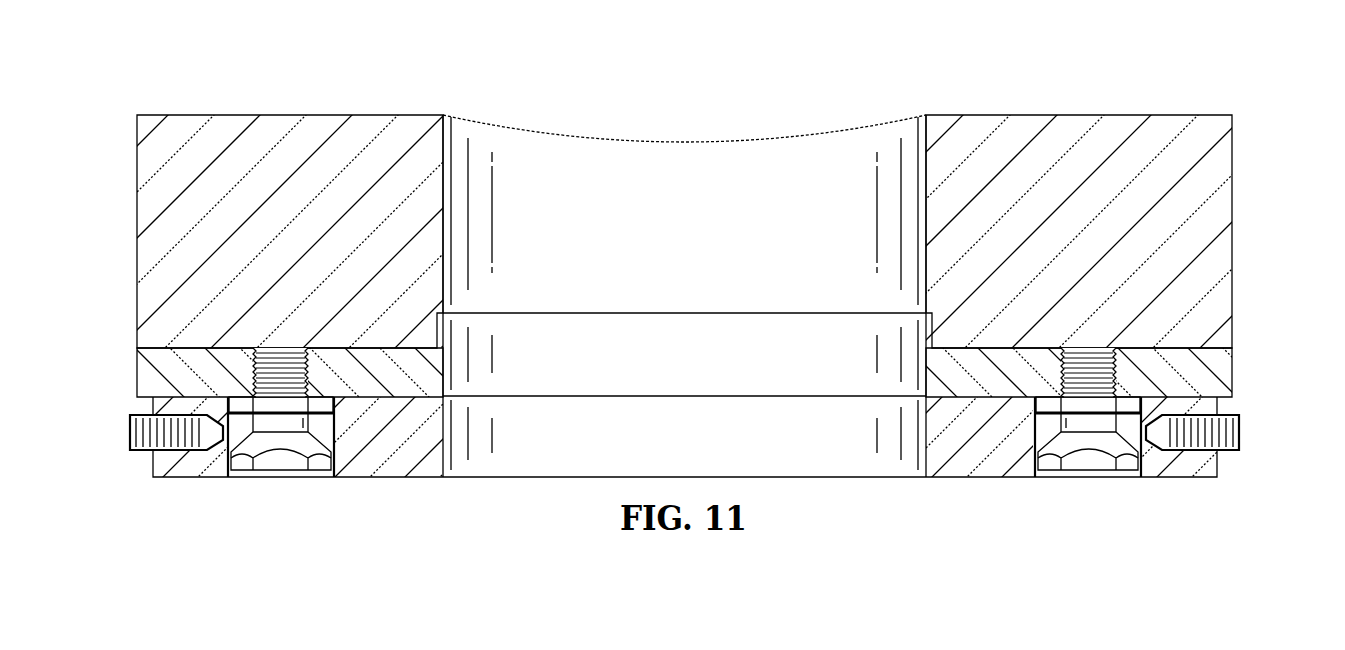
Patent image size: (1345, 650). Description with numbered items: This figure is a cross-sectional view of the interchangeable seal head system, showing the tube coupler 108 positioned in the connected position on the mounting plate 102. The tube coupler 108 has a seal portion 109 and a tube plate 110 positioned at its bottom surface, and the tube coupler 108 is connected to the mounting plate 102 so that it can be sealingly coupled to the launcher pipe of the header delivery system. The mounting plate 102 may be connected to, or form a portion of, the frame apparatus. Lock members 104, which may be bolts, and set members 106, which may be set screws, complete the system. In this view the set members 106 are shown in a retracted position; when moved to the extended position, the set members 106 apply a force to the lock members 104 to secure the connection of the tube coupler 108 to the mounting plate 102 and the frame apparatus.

The mounting plate 102 is at (389, 478).
The lock members 104 is at (278, 477).
The set members 106 is at (130, 433).
The tube coupler 108 is at (219, 83).
The seal portion 109 is at (1126, 112).
The tube plate 110 is at (1228, 372).